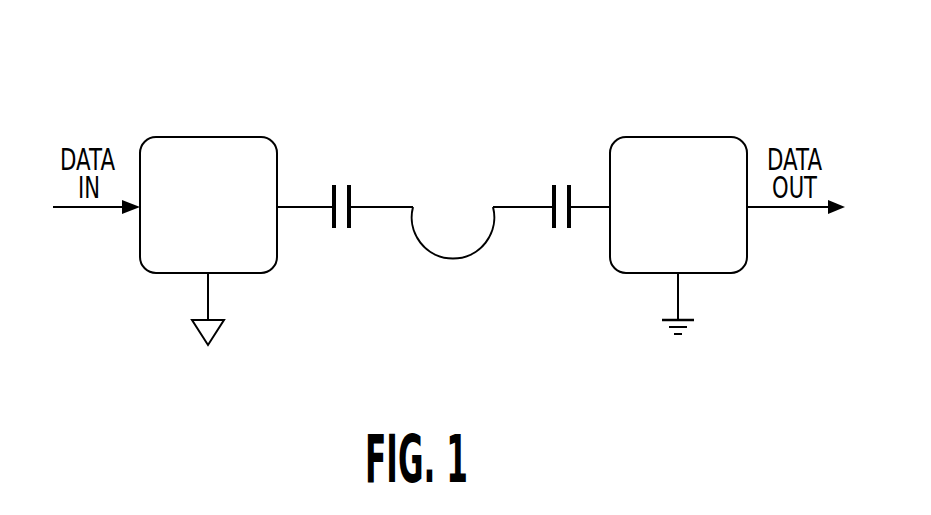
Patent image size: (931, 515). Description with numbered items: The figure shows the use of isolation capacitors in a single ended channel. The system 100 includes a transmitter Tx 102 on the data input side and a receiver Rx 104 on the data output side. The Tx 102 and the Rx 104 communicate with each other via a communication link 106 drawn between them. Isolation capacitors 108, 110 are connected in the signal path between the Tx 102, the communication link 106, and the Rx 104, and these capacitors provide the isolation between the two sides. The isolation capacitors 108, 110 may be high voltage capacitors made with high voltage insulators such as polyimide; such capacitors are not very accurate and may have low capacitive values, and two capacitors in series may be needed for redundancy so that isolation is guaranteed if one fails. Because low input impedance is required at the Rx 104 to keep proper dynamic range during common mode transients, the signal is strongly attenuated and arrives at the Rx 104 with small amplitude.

The system 100 is at (136, 43).
The transmitter Tx 102 is at (207, 137).
The receiver Rx 104 is at (670, 137).
The communication link 106 is at (425, 222).
The isolation capacitor 108 is at (352, 215).
The isolation capacitor 110 is at (552, 215).